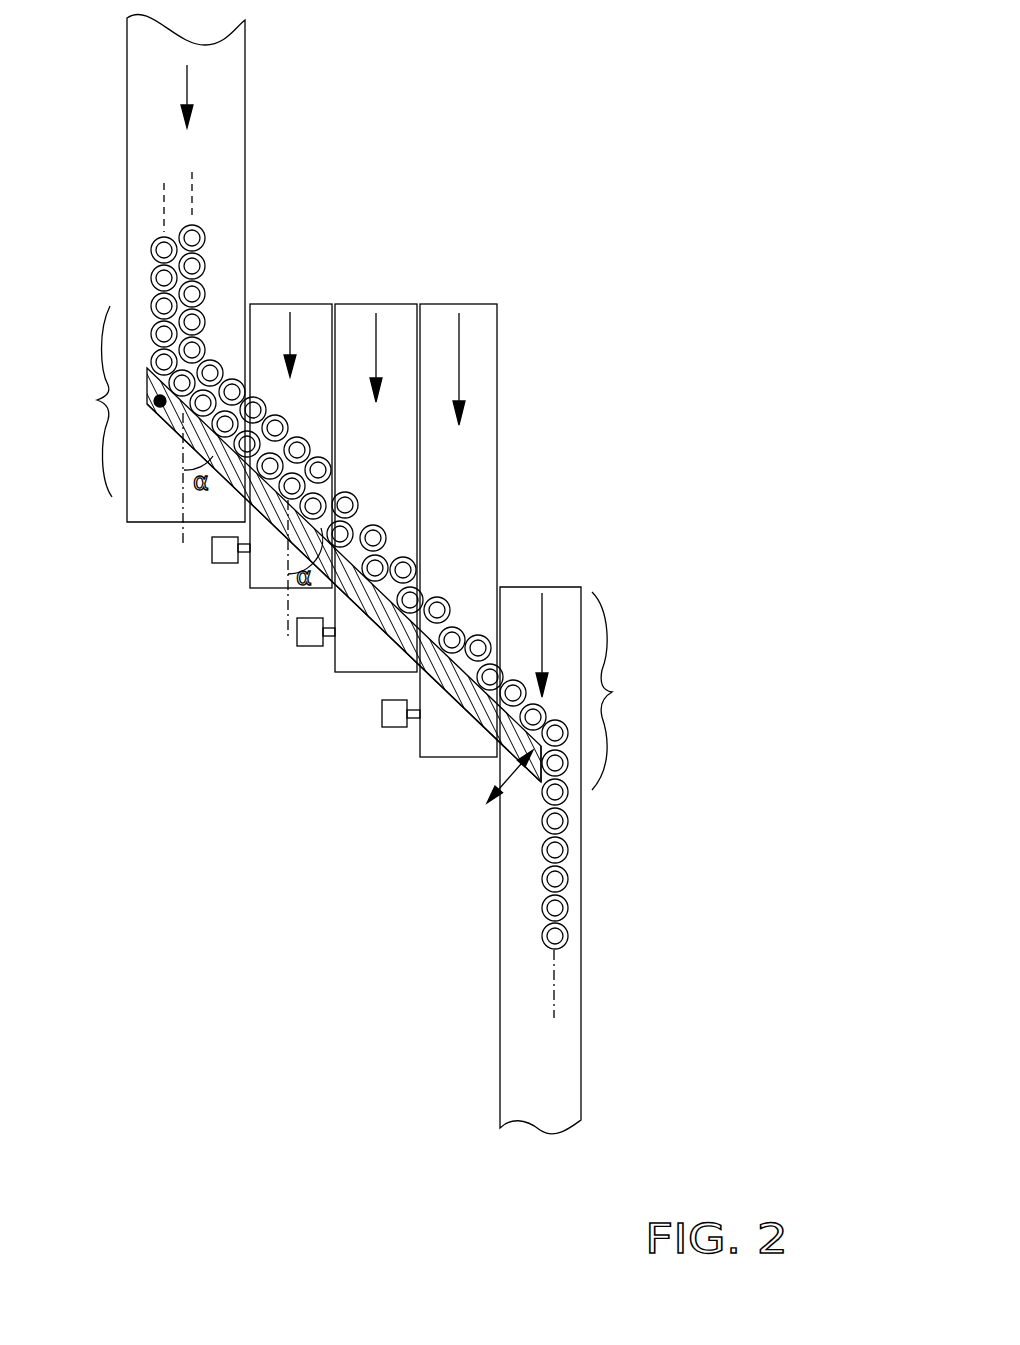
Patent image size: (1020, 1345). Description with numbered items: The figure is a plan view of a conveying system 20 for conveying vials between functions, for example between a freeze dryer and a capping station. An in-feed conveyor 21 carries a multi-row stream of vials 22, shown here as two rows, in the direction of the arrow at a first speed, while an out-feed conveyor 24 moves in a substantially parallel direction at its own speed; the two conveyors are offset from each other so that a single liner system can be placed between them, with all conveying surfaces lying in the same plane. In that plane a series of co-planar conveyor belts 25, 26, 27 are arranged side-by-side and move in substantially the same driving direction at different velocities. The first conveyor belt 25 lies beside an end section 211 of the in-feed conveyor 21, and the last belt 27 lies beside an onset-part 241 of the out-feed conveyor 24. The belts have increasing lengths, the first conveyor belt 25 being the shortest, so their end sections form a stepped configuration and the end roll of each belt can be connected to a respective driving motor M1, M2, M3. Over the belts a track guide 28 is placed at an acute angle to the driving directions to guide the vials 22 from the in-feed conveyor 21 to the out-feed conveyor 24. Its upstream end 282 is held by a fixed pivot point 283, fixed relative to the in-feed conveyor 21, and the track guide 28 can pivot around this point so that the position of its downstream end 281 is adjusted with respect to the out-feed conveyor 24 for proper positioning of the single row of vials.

The conveying system 20 is at (480, 120).
The in-feed conveyor 21 is at (233, 47).
The vials 22 is at (136, 246).
The out-feed conveyor 24 is at (555, 978).
The first conveyor belt 25 is at (270, 317).
The second conveyor belt 26 is at (355, 313).
The last conveyor belt 27 is at (435, 317).
The track guide 28 is at (385, 613).
The end section of in-feed conveyor 211 is at (83, 401).
The onset-part of out-feed conveyor 241 is at (605, 691).
The downstream end of track guide 281 is at (517, 740).
The upstream end of track guide 282 is at (178, 430).
The fixed pivot point 283 is at (157, 403).
The driving motor M1 is at (227, 557).
The driving motor M2 is at (310, 640).
The driving motor M3 is at (397, 717).